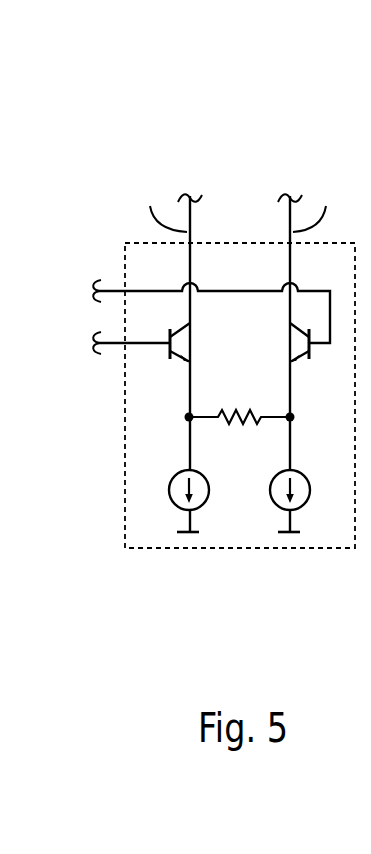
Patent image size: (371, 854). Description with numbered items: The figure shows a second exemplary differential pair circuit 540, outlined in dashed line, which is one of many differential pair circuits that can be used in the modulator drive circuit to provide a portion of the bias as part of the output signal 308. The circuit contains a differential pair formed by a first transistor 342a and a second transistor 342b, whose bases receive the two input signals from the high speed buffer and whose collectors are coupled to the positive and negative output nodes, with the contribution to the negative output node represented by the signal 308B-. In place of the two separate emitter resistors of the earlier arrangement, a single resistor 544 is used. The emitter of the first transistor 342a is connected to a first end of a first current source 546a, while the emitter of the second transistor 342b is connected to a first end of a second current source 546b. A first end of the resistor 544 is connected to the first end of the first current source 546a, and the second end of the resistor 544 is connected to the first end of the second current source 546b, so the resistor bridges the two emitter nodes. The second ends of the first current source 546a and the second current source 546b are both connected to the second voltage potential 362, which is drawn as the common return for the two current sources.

The second exemplary differential pair circuit 540 is at (172, 151).
The output signal 308 is at (258, 232).
The signal provided to the output node V_Out- 308B- is at (114, 352).
The first transistor 342a is at (183, 342).
The second transistor 342b is at (297, 352).
The resistor 544 is at (220, 420).
The first current source 546a is at (173, 473).
The second current source 546b is at (307, 473).
The second voltage potential 362 is at (183, 533).